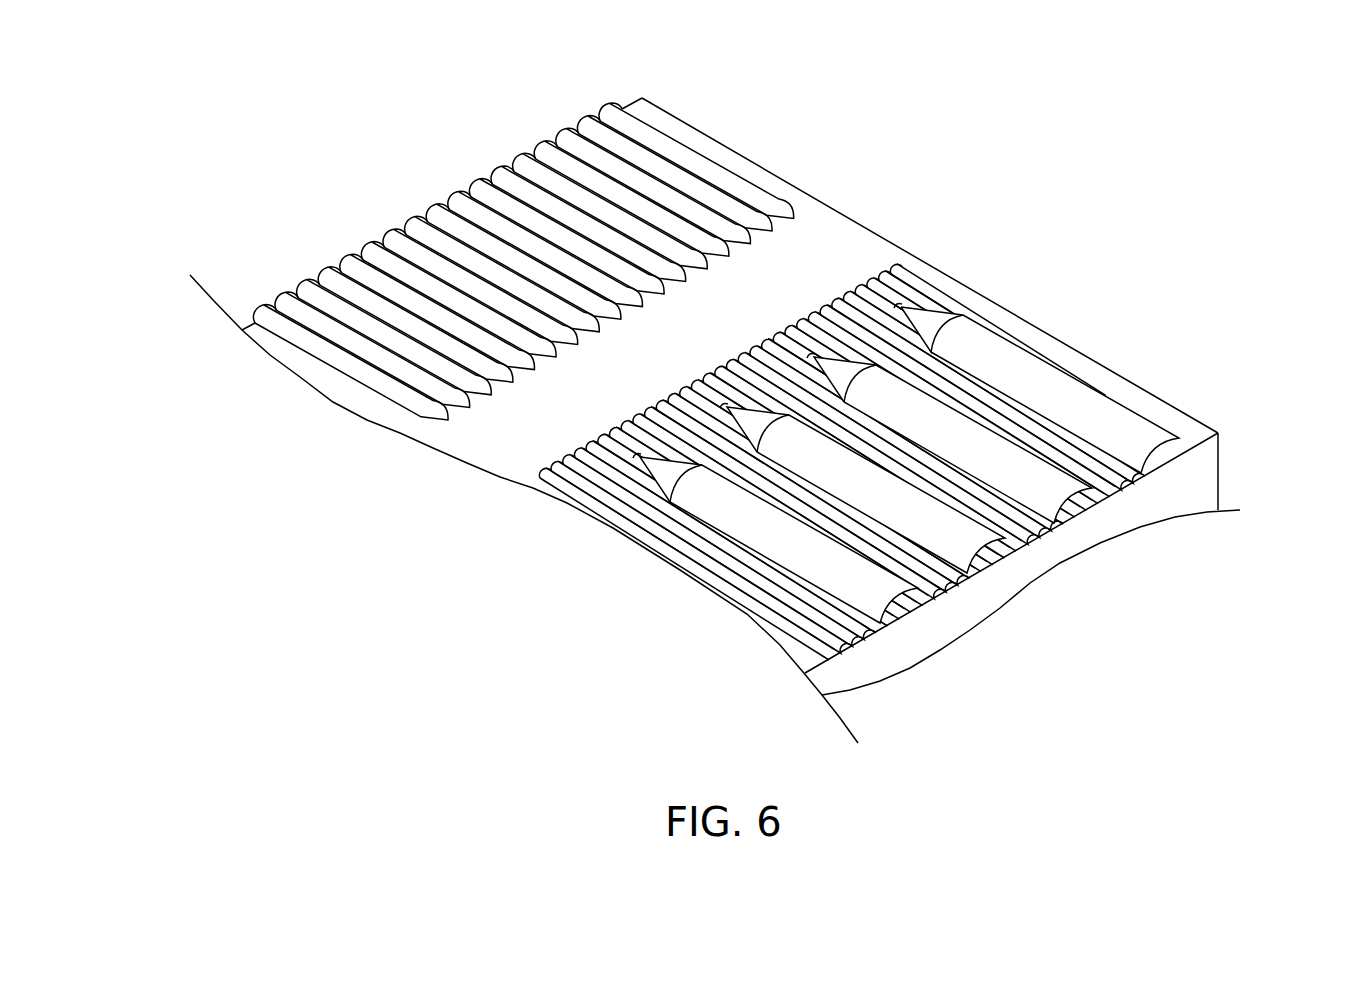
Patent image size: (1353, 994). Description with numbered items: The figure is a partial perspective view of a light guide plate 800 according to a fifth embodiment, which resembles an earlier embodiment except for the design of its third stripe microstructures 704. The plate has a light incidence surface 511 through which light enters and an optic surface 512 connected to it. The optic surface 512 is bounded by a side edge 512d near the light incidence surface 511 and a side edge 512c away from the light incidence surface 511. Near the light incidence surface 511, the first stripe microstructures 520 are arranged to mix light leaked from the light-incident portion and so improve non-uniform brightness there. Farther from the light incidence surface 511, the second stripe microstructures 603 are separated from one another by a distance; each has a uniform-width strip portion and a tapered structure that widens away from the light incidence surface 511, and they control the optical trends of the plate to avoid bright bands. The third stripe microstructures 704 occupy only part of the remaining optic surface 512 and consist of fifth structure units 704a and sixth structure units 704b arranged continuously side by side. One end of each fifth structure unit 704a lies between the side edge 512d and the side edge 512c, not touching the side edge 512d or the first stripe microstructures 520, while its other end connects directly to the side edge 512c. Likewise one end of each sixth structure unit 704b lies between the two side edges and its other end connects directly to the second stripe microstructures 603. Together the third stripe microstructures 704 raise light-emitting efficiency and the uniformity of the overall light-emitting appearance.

The light guide plate 800 is at (173, 103).
The light incidence surface 511 is at (523, 225).
The optic surface 512 is at (902, 379).
The side edge of the optic surface away from the light incidence surface 512c is at (1110, 495).
The side edge of the optic surface near the light incidence surface 512d is at (550, 152).
The first stripe microstructures 520 is at (692, 163).
The second stripe microstructures 603 is at (1060, 397).
The third stripe microstructures 704 is at (906, 361).
The fifth structure unit 704a is at (957, 381).
The sixth structure unit 704b is at (893, 300).